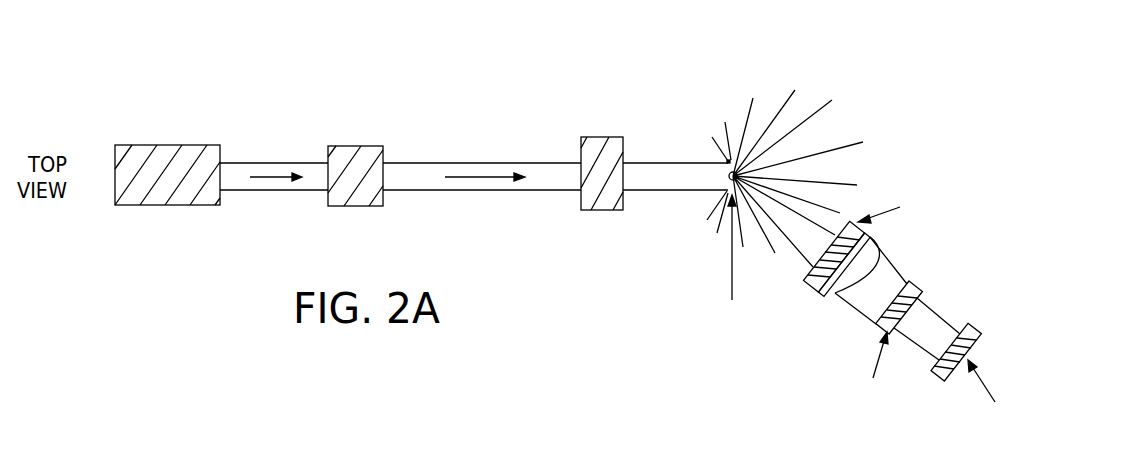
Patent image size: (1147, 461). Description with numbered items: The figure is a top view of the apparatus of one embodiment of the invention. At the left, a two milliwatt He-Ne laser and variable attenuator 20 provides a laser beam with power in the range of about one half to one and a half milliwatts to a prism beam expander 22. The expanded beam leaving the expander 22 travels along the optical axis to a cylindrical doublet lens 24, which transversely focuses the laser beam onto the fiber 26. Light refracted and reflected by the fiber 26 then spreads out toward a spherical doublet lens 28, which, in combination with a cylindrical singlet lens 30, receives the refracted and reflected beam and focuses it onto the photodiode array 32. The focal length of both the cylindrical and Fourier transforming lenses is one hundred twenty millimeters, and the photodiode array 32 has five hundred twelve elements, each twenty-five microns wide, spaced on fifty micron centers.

The He-Ne laser and variable attenuator 20 is at (203, 147).
The prism beam expander 22 is at (370, 151).
The cylindrical doublet lens 24 is at (607, 141).
The fiber 26 is at (718, 130).
The spherical doublet lens 28 is at (847, 290).
The cylindrical singlet lens 30 is at (911, 285).
The photodiode array 32 is at (980, 340).